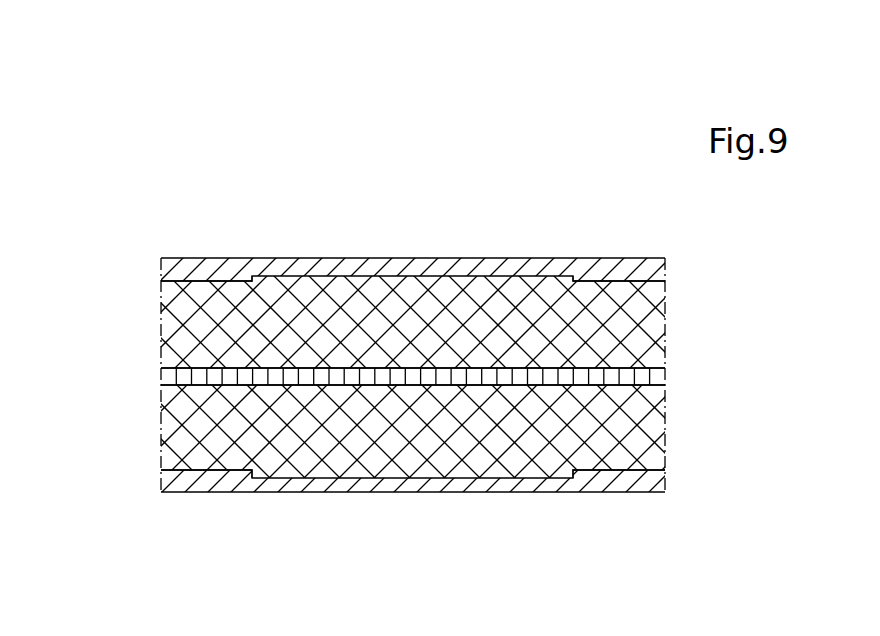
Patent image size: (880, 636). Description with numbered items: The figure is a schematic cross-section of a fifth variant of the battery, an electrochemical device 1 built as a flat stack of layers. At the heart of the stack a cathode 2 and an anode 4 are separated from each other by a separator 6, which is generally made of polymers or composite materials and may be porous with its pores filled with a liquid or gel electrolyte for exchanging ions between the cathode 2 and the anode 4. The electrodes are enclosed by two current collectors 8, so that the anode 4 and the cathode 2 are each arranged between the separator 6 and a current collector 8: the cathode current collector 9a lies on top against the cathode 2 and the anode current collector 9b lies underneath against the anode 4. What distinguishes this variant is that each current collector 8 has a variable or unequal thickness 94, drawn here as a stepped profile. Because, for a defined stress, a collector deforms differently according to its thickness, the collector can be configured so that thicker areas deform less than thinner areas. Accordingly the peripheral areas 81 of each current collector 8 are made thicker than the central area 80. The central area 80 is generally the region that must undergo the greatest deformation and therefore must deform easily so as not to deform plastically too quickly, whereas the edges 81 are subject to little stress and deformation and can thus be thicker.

The electrochemical device 1 is at (108, 184).
The cathode 2 is at (182, 328).
The anode 4 is at (187, 445).
The separator 6 is at (176, 380).
The current collector 8 is at (640, 259).
The cathode current collector 9a is at (163, 259).
The anode current collector 9b is at (172, 488).
The central area 80 is at (538, 510).
The peripheral areas 81 is at (643, 494).
The variable thickness 94 is at (643, 281).